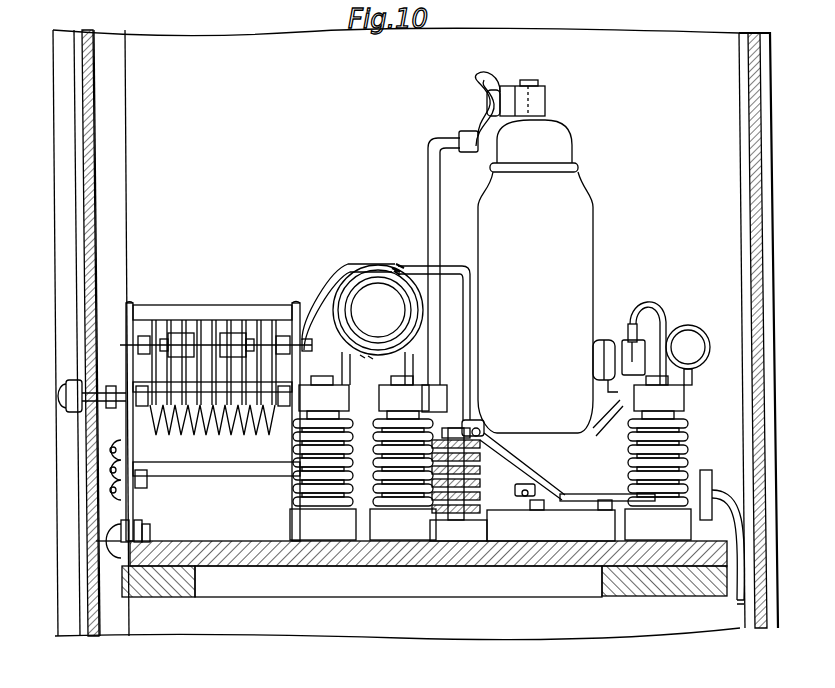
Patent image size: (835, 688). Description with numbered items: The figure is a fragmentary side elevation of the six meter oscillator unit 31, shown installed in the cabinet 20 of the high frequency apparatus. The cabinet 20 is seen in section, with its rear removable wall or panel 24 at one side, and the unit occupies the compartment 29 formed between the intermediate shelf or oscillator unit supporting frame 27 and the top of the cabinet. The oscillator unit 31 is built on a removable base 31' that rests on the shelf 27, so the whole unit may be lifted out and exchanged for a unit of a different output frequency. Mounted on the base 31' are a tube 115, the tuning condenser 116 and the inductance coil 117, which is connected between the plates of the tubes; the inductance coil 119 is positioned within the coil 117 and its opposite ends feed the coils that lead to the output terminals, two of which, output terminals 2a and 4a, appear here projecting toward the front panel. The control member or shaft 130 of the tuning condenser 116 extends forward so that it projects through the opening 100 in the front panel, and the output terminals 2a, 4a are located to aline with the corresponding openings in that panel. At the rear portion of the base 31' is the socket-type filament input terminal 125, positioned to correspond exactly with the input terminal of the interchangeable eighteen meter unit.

The cabinet 20 is at (92, 136).
The rear removable wall or panel 24 is at (755, 153).
The compartment 29 is at (232, 46).
The intermediate shelf or oscillator unit supporting frame 27 is at (655, 590).
The oscillator unit 31 is at (393, 310).
The removable base 31' is at (428, 580).
The opening 100 is at (88, 372).
The control member or shaft 130 is at (104, 402).
The output terminal 2a is at (110, 478).
The output terminal 4a is at (110, 541).
The tube 115 is at (566, 330).
The tuning condenser 116 is at (228, 325).
The inductance coil 117 is at (396, 271).
The inductance coil 119 is at (364, 288).
The filament input terminal 125 is at (712, 490).